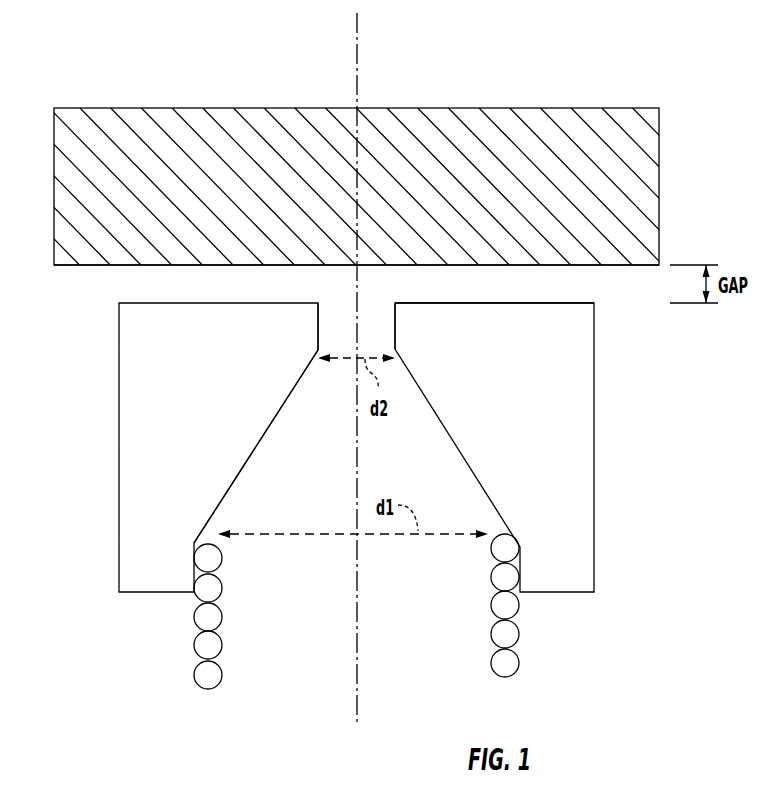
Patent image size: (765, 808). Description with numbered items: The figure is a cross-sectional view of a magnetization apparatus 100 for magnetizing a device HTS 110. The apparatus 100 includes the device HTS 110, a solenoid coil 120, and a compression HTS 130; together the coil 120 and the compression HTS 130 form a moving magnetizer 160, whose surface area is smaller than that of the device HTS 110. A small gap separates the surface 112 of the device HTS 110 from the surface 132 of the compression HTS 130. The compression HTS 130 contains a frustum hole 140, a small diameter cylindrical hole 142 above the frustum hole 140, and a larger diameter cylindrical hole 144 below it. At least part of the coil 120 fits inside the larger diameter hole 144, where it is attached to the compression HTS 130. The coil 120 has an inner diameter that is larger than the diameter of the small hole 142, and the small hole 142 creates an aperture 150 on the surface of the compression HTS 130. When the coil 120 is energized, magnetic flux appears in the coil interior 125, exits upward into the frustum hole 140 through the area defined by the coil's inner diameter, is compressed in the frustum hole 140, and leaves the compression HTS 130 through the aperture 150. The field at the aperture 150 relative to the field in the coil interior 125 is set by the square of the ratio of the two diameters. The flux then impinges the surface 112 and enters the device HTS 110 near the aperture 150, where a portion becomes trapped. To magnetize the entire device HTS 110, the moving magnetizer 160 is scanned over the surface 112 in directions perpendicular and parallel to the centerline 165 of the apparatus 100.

The magnetization apparatus 100 is at (99, 62).
The centerline 165 is at (358, 63).
The device HTS 110 is at (646, 146).
The surface of the device HTS 112 is at (586, 258).
The aperture 150 is at (339, 303).
The frustum hole 140 is at (315, 479).
The small diameter cylindrical hole 142 is at (335, 332).
The larger diameter cylindrical hole 144 is at (205, 562).
The moving magnetizer 160 is at (595, 648).
The compression HTS 130 is at (594, 388).
The surface of the compression HTS 132 is at (548, 304).
The solenoid coil 120 is at (520, 638).
The coil interior 125 is at (425, 658).